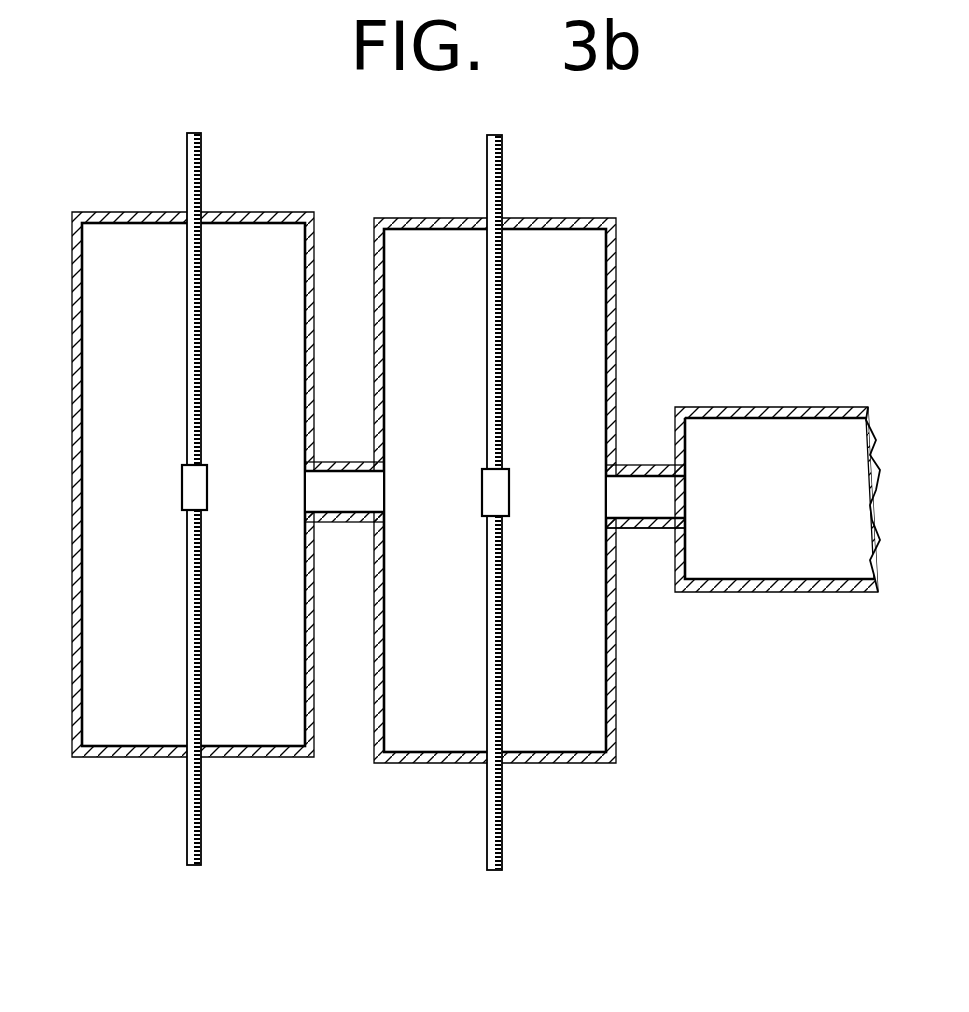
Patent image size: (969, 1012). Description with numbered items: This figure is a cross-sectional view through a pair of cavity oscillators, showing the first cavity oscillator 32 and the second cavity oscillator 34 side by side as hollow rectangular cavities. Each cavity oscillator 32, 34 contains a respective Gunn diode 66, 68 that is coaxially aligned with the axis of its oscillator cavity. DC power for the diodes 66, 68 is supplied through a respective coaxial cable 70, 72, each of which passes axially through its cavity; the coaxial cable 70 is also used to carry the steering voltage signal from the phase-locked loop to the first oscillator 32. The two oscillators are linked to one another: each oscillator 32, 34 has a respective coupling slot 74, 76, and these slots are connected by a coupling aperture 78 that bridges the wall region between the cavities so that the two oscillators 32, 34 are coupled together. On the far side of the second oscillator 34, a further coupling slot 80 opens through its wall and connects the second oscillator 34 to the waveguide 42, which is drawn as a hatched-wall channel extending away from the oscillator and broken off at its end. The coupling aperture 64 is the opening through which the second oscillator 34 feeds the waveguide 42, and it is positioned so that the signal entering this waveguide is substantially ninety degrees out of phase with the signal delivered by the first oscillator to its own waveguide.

The first cavity oscillator 32 is at (103, 760).
The second cavity oscillator 34 is at (565, 765).
The waveguide 42 is at (824, 408).
The coupling aperture 64 is at (652, 530).
The Gunn diode 66 is at (185, 487).
The Gunn diode 68 is at (500, 488).
The coaxial cable 70 is at (187, 170).
The coaxial cable 72 is at (507, 177).
The coupling slot 74 is at (313, 488).
The coupling slot 76 is at (373, 493).
The coupling aperture 78 is at (345, 460).
The coupling slot 80 is at (613, 495).